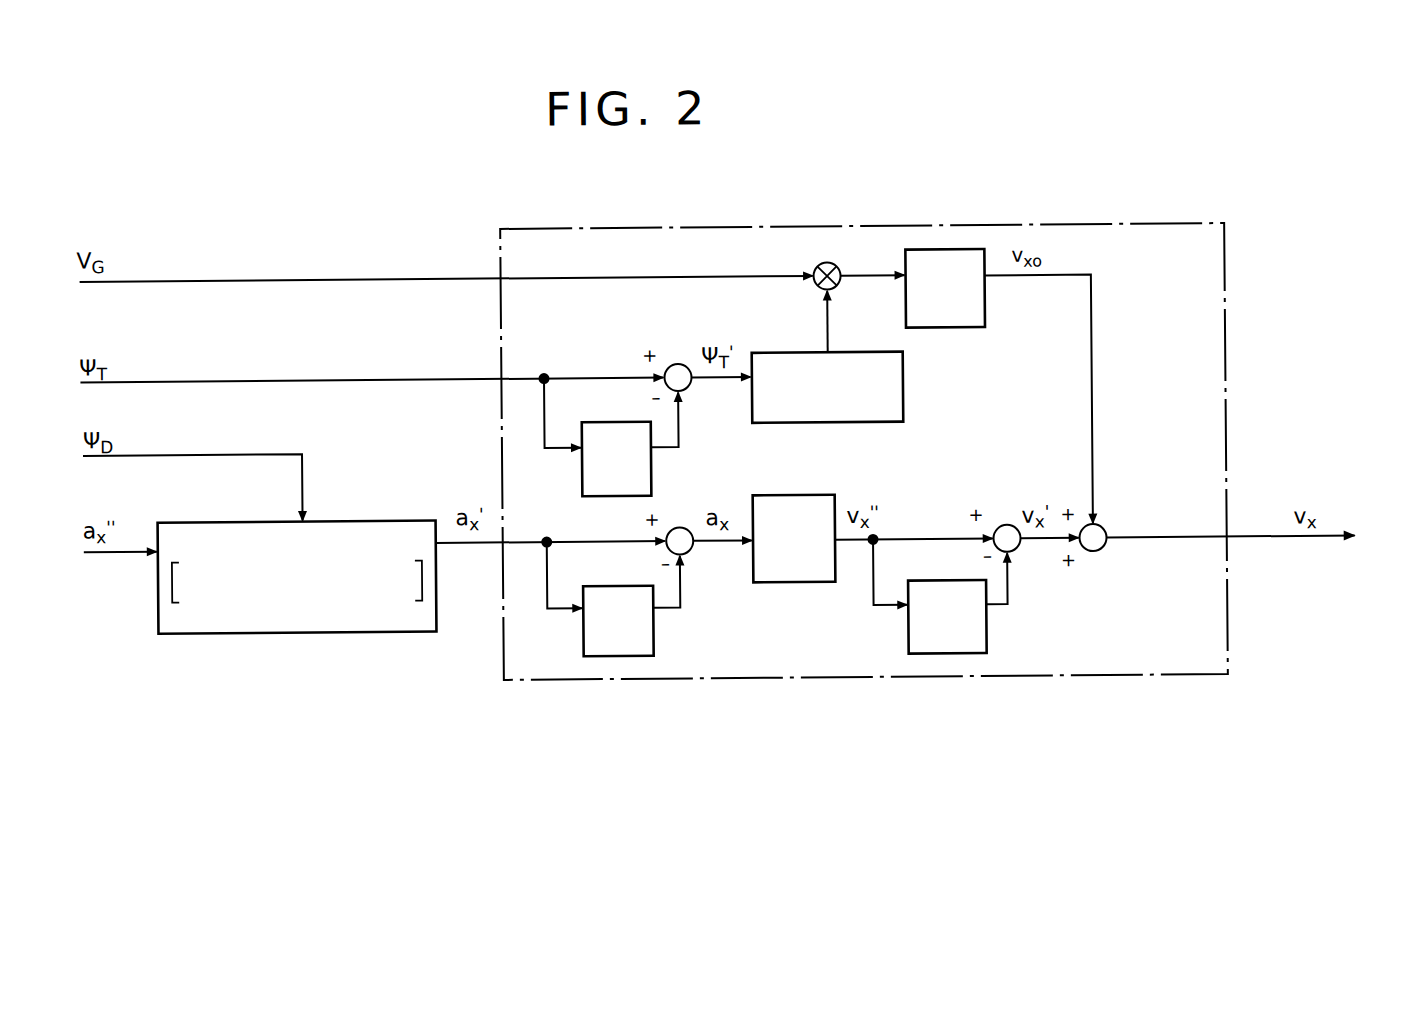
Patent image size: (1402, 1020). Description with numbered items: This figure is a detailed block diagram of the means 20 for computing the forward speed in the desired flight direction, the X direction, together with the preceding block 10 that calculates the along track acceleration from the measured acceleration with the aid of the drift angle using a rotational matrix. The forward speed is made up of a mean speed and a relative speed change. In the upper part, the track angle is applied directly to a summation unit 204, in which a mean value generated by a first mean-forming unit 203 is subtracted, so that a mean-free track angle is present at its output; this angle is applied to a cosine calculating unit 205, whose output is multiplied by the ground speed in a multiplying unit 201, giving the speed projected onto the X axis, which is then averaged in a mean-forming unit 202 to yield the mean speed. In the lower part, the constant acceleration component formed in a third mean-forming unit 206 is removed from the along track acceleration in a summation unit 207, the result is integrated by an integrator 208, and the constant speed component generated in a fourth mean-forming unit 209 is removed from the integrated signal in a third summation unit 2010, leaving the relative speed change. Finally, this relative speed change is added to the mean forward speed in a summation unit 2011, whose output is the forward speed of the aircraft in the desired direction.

The means for computing forward speed 20 is at (1164, 226).
The block for calculating along track acceleration 10 is at (275, 628).
The multiplying unit 201 is at (838, 287).
The mean-forming unit 202 is at (986, 316).
The first mean-forming unit 203 is at (651, 484).
The summation unit 204 is at (689, 387).
The cos ψT' calculating unit 205 is at (888, 422).
The third mean-forming unit 206 is at (652, 636).
The summation unit 207 is at (688, 550).
The integrator 208 is at (803, 582).
The fourth mean-forming unit 209 is at (985, 648).
The third summation unit 2010 is at (1016, 550).
The summation unit 2011 is at (1102, 550).